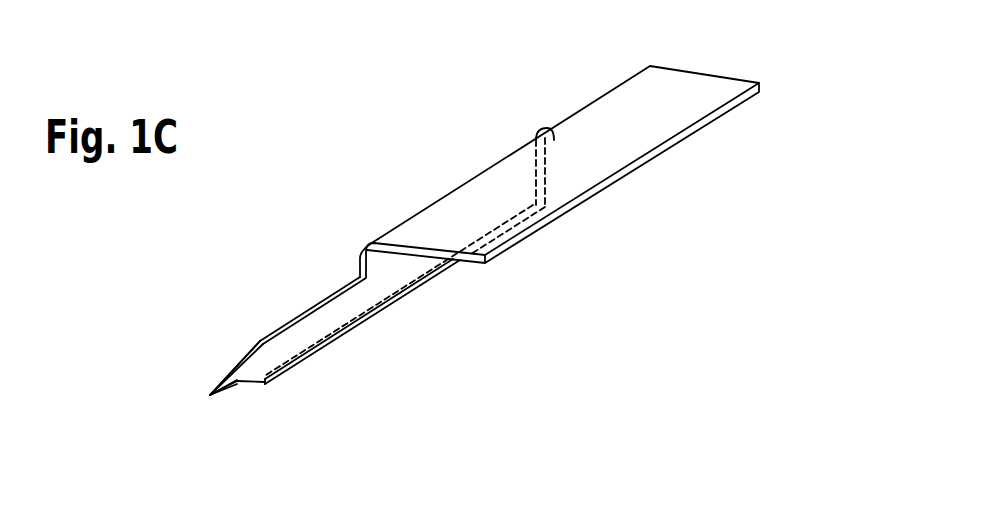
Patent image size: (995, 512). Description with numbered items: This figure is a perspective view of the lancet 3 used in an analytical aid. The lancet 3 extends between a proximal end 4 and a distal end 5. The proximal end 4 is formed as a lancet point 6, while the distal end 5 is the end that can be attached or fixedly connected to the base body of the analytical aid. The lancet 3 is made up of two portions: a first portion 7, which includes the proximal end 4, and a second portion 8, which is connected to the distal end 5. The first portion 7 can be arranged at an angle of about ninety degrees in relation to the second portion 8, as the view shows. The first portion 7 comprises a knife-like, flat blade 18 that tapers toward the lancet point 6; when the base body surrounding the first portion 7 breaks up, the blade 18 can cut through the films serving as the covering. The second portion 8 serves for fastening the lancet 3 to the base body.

The lancet 3 is at (420, 188).
The proximal end 4 is at (260, 322).
The distal end 5 is at (516, 180).
The lancet point 6 is at (210, 394).
The first portion 7 is at (336, 318).
The second portion 8 is at (622, 120).
The knife-like blade 18 is at (308, 335).